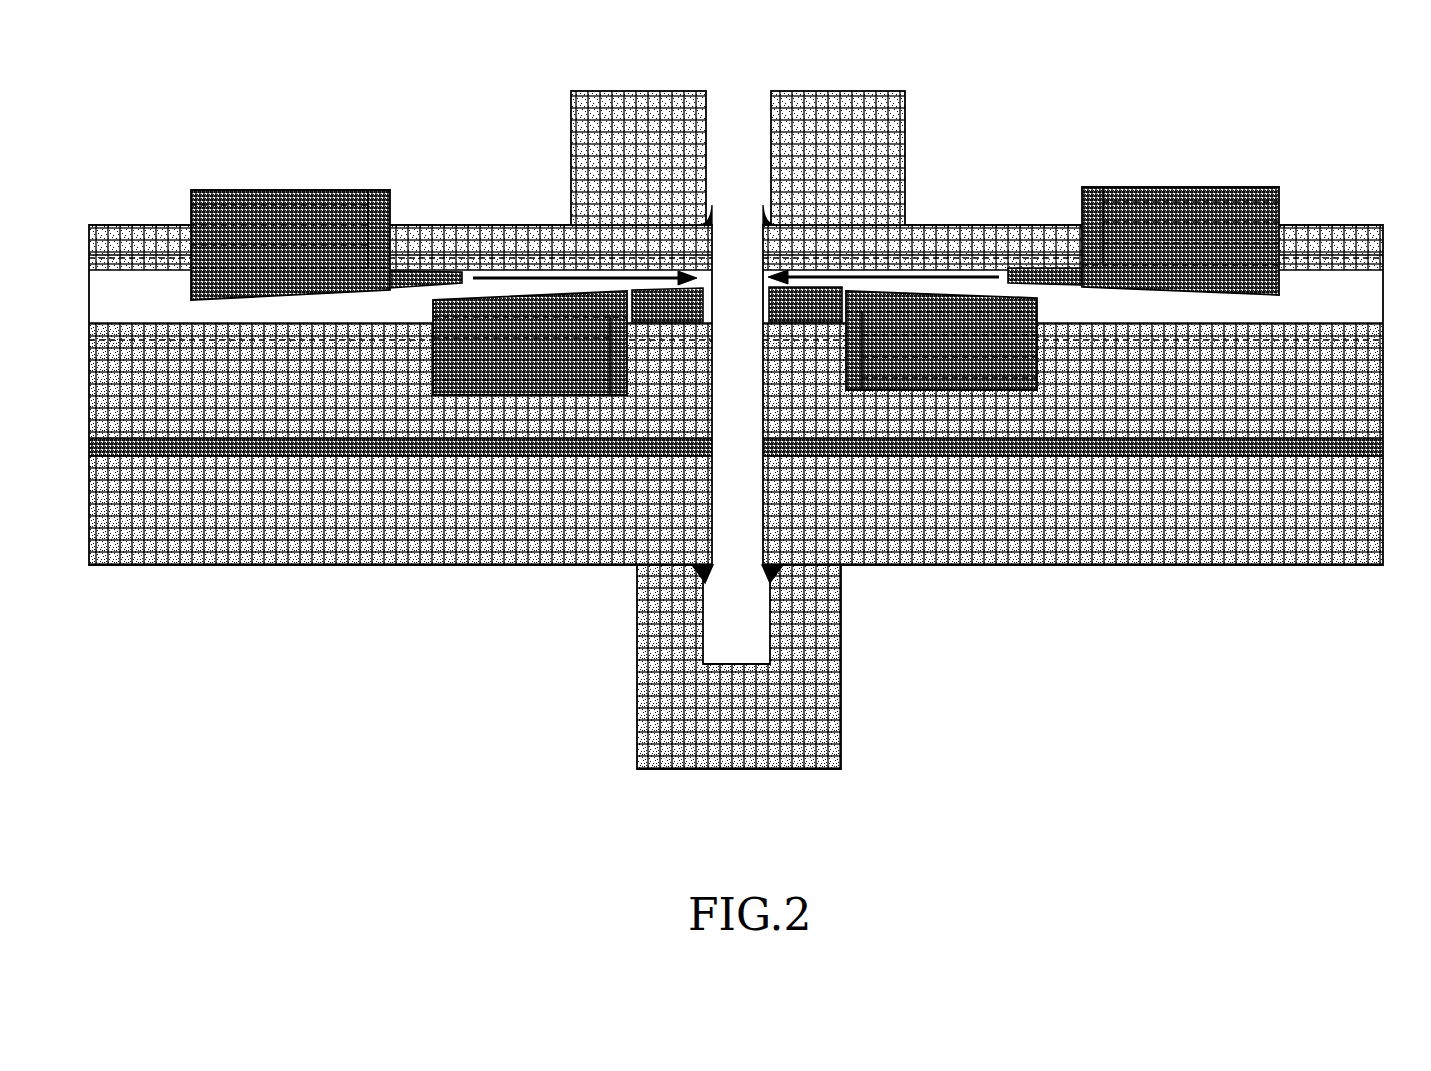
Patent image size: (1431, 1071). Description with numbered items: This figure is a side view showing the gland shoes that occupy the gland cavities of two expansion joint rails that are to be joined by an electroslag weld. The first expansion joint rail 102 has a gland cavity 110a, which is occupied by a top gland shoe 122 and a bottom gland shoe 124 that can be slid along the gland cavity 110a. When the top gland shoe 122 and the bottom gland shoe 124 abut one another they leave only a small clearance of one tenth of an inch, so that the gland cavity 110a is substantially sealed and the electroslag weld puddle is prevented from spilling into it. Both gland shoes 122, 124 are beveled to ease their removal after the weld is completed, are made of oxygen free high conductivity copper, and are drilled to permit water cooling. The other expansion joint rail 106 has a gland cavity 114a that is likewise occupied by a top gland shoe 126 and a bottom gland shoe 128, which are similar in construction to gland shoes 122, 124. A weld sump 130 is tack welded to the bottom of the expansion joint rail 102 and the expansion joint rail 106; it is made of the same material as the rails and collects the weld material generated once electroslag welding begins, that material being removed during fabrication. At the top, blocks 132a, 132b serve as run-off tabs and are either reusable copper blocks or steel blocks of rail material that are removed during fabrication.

The expansion joint rail 102 is at (736, 439).
The expansion joint rail 106 is at (193, 533).
The gland cavity 110a is at (1312, 283).
The gland cavity 114a is at (105, 308).
The top gland shoe 122 is at (1155, 187).
The bottom gland shoe 124 is at (957, 392).
The top gland shoe 126 is at (328, 190).
The bottom gland shoe 128 is at (433, 365).
The weld sump 130 is at (841, 675).
The run-off tab block 132a is at (830, 85).
The run-off tab block 132b is at (620, 85).